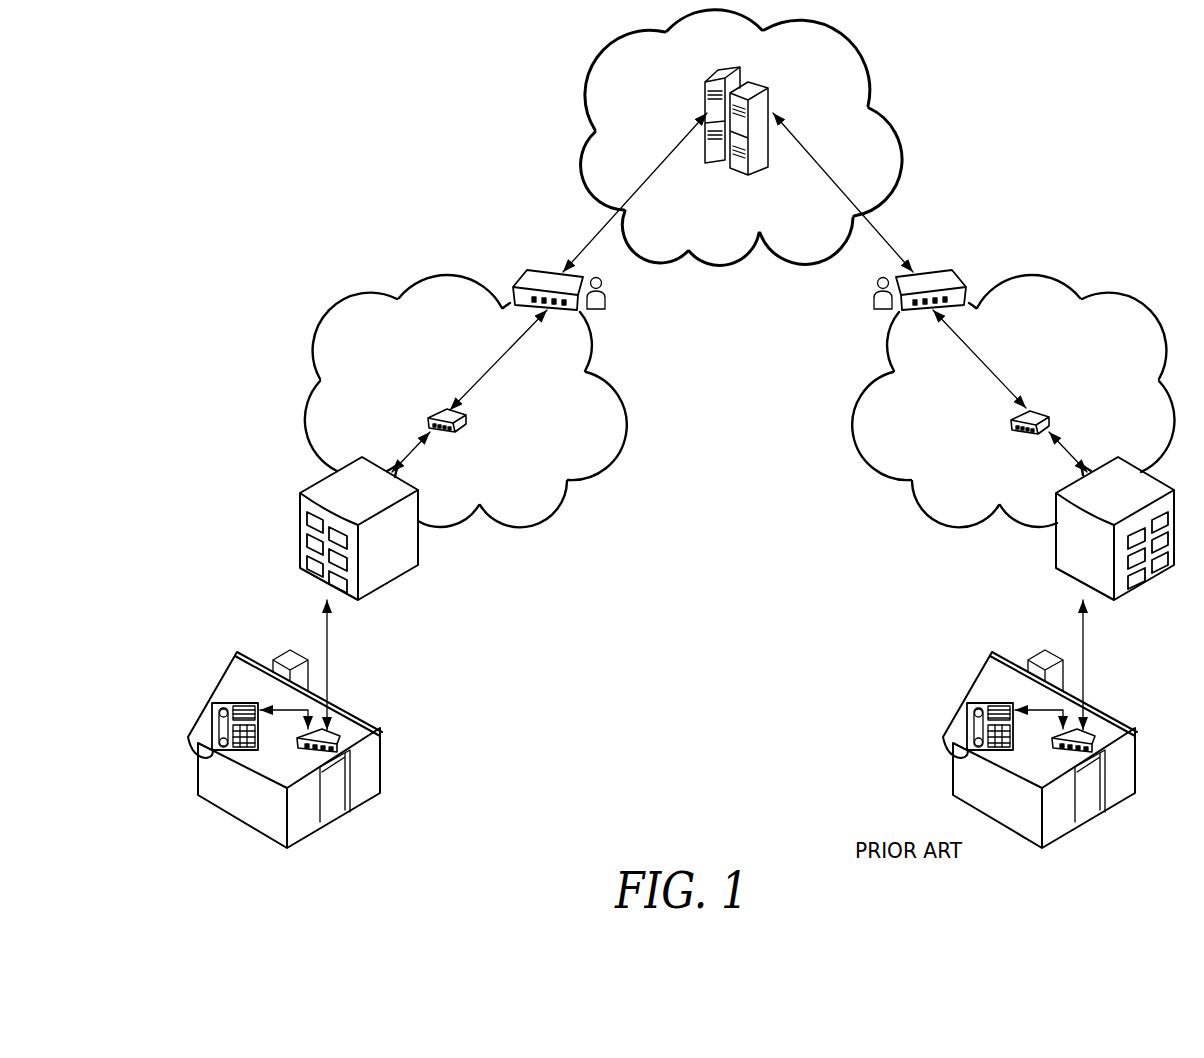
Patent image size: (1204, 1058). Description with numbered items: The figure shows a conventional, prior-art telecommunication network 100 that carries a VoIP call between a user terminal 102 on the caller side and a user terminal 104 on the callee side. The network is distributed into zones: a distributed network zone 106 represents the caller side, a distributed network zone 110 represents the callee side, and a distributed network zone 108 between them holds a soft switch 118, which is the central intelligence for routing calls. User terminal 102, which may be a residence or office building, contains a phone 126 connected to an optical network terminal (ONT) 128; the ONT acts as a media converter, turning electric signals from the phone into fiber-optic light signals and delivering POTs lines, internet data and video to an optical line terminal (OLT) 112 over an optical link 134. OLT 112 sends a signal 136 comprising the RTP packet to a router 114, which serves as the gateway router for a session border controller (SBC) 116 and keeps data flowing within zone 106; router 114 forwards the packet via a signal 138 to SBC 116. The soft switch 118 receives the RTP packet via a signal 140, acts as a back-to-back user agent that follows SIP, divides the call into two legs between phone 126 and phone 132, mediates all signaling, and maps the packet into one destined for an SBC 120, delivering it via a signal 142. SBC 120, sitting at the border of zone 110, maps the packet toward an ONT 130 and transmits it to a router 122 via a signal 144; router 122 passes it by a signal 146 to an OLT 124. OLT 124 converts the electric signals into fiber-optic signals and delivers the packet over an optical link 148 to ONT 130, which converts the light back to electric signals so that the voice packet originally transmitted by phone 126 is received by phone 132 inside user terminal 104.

The conventional telecommunication network 100 is at (332, 182).
The user terminal 102 is at (212, 695).
The user terminal 104 is at (967, 695).
The distributed network zone 106 is at (624, 420).
The distributed network zone 108 is at (846, 40).
The distributed network zone 110 is at (856, 414).
The optical line terminal (OLT) 112 is at (419, 552).
The router 114 is at (441, 408).
The session border controller (SBC) 116 is at (575, 277).
The soft switch 118 is at (705, 96).
The session border controller (SBC) 120 is at (897, 277).
The router 122 is at (1036, 410).
The optical line terminal (OLT) 124 is at (1057, 548).
The phone 126 is at (212, 725).
The optical network terminal (ONT) 128 is at (362, 723).
The optical network terminal (ONT) 130 is at (1117, 723).
The phone 132 is at (967, 725).
The optical link 134 is at (324, 621).
The signal 136 is at (411, 450).
The signal 138 is at (503, 357).
The signal 140 is at (667, 155).
The signal 142 is at (801, 145).
The signal 144 is at (973, 349).
The signal 146 is at (1066, 450).
The optical link 148 is at (1080, 614).